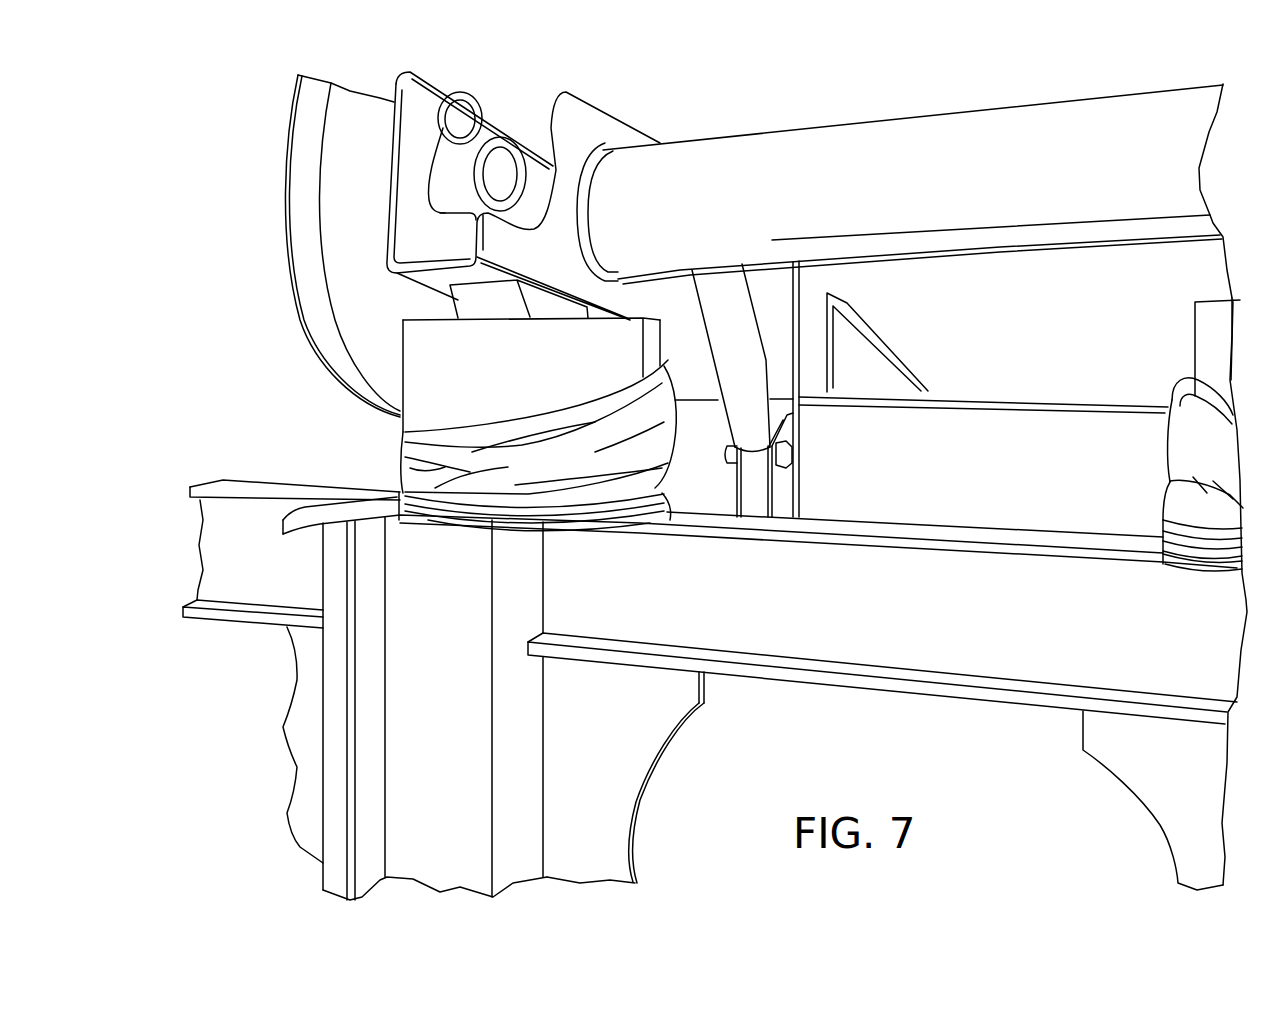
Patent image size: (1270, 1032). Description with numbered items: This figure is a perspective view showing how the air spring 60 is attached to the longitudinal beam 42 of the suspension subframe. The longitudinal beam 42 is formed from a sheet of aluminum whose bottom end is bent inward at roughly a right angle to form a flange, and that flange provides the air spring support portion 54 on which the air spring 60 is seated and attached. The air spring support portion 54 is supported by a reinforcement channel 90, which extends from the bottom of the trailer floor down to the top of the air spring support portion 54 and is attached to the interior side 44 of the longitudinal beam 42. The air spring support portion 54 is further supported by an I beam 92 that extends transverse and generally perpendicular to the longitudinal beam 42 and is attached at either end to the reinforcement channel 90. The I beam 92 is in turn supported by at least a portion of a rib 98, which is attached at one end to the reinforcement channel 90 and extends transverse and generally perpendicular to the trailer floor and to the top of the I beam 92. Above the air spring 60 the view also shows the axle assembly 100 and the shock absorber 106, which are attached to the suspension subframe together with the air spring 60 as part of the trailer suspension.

The longitudinal beam 42 is at (298, 697).
The interior side 44 is at (305, 769).
The air spring support portion 54 is at (421, 522).
The air spring 60 is at (406, 444).
The reinforcement channel 90 is at (456, 752).
The I beam 92 is at (898, 619).
The rib 98 is at (607, 747).
The axle assembly 100 is at (950, 184).
The shock absorber 106 is at (727, 288).